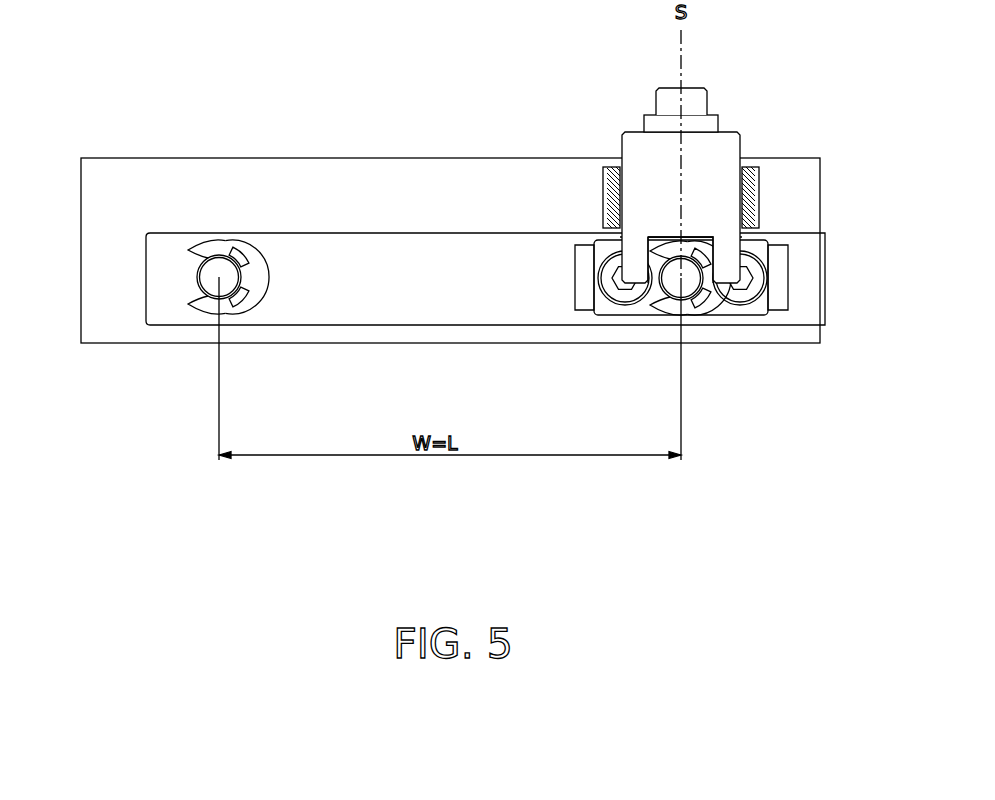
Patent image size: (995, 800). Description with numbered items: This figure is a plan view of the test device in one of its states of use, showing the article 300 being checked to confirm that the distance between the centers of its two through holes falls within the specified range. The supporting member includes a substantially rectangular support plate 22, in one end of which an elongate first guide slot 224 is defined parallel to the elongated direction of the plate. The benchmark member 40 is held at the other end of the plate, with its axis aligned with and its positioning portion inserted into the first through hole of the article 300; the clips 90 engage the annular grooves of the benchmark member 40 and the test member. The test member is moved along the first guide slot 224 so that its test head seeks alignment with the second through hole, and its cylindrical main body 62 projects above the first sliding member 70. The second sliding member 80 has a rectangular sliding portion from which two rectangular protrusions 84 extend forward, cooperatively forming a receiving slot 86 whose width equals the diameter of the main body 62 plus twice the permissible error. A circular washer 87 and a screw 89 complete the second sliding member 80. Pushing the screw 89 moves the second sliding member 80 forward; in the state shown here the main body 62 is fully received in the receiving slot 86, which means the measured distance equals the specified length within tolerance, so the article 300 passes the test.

The article 300 is at (155, 180).
The support plate 22 is at (162, 267).
The first guide slot 224 is at (783, 287).
The benchmark member 40 is at (249, 210).
The clips 90 is at (222, 247).
The first sliding member 70 is at (600, 300).
The main body 62 is at (687, 268).
The protrusions 84 is at (633, 252).
The second sliding member 80 is at (637, 142).
The receiving slot 86 is at (657, 236).
The washer 87 is at (715, 123).
The screw 89 is at (698, 102).